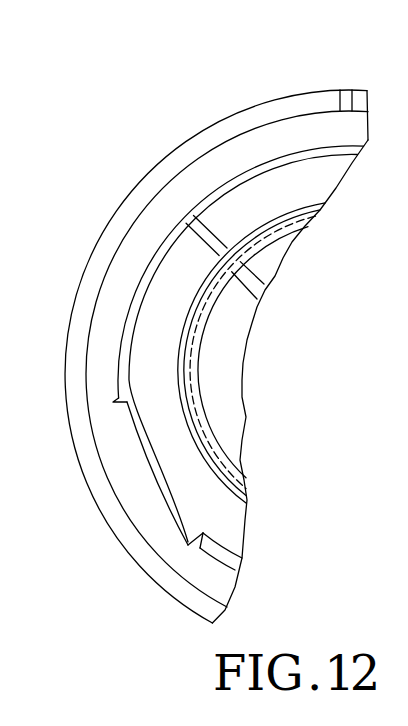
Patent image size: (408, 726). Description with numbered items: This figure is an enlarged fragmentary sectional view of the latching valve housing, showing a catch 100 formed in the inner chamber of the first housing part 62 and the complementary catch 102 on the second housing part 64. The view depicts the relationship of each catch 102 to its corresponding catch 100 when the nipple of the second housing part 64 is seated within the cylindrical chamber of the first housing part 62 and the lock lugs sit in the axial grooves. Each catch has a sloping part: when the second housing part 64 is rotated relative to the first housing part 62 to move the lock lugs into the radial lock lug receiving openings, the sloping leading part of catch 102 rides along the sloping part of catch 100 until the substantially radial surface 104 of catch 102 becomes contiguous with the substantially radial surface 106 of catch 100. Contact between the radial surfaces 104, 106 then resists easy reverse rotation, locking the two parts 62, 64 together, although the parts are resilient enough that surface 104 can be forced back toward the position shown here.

The first housing part 62 is at (256, 103).
The second housing part 64 is at (213, 520).
The catch 100 is at (120, 418).
The catch 102 is at (190, 493).
The substantially radial surface 104 is at (193, 580).
The substantially radial surface 106 is at (116, 391).